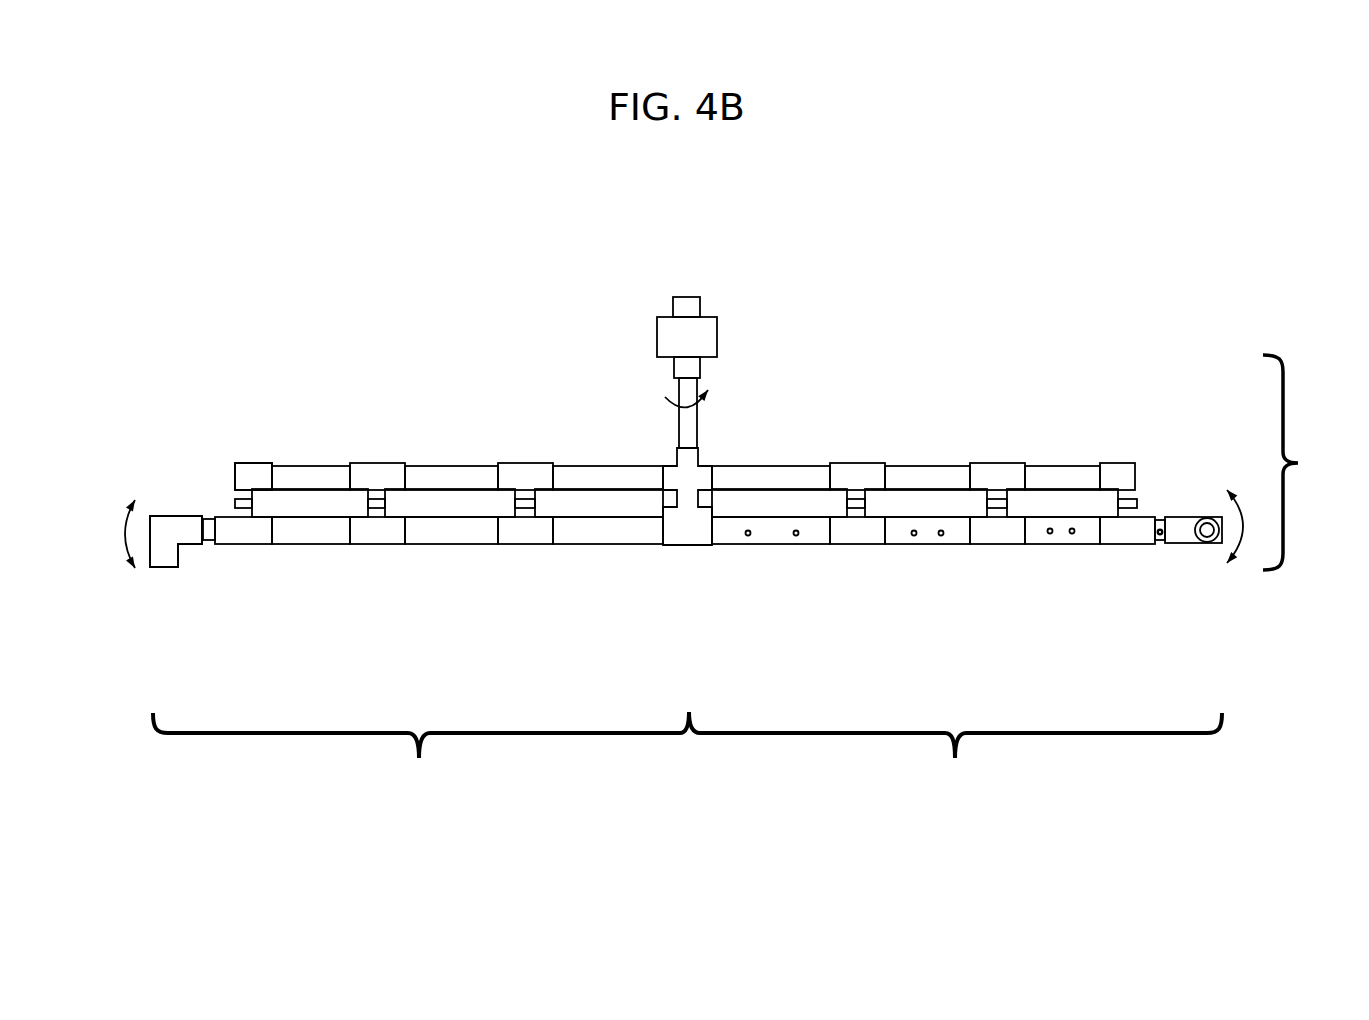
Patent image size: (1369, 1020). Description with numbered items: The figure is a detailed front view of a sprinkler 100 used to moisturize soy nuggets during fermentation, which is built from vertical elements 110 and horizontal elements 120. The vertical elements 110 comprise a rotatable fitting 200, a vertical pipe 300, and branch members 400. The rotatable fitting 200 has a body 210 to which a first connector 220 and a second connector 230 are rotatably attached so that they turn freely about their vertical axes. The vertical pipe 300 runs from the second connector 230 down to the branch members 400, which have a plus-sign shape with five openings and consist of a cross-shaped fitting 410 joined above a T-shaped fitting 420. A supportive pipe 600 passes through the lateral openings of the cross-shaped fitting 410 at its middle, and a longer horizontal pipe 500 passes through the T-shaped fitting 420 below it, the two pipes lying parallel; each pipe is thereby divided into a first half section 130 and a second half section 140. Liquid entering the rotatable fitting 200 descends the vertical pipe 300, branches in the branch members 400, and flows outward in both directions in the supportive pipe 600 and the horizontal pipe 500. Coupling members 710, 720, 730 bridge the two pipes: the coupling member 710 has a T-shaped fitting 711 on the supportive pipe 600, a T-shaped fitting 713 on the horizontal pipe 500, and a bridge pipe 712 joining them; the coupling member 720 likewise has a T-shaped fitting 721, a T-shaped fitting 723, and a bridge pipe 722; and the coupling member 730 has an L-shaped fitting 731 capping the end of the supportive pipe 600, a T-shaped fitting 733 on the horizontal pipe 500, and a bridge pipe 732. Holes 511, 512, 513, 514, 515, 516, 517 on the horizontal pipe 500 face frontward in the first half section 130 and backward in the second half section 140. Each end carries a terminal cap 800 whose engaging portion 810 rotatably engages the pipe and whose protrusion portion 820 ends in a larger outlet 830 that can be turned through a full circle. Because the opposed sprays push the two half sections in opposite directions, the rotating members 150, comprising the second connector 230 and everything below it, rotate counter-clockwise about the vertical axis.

The sprinkler 100 is at (880, 318).
The vertical elements 110 is at (635, 318).
The horizontal elements 120 is at (223, 447).
The first half section 130 is at (955, 751).
The second half section 140 is at (421, 751).
The rotating members 150 is at (1310, 462).
The rotatable fitting 200 is at (722, 315).
The body 210 is at (672, 338).
The first connector 220 is at (684, 308).
The second connector 230 is at (680, 370).
The vertical pipe 300 is at (700, 421).
The branch members 400 is at (661, 548).
The cross-shaped fitting 410 is at (703, 477).
The T-shaped fitting 420 is at (703, 526).
The horizontal pipe 500 is at (303, 515).
The supportive pipe 600 is at (322, 462).
The hole 511 is at (616, 548).
The hole 512 is at (574, 548).
The hole 513 is at (468, 548).
The hole 514 is at (428, 548).
The hole 515 is at (315, 548).
The hole 516 is at (278, 548).
The hole 517 is at (203, 540).
The coupling member 710 is at (496, 549).
The T-shaped fitting 711 is at (508, 475).
The bridge pipe 712 is at (527, 500).
The T-shaped fitting 713 is at (545, 530).
The coupling member 720 is at (345, 549).
The T-shaped fitting 721 is at (362, 475).
The bridge pipe 722 is at (378, 500).
The T-shaped fitting 723 is at (420, 530).
The coupling member 730 is at (208, 549).
The L-shaped fitting 731 is at (1112, 475).
The bridge pipe 732 is at (1130, 500).
The T-shaped fitting 733 is at (1145, 530).
The terminal cap 800 is at (150, 510).
The engaging portion 810 is at (191, 530).
The protrusion portion 820 is at (167, 562).
The outlet 830 is at (160, 570).